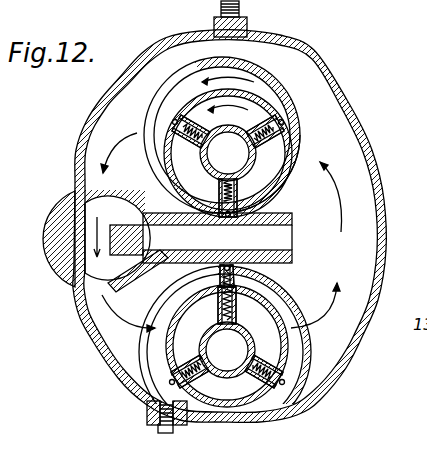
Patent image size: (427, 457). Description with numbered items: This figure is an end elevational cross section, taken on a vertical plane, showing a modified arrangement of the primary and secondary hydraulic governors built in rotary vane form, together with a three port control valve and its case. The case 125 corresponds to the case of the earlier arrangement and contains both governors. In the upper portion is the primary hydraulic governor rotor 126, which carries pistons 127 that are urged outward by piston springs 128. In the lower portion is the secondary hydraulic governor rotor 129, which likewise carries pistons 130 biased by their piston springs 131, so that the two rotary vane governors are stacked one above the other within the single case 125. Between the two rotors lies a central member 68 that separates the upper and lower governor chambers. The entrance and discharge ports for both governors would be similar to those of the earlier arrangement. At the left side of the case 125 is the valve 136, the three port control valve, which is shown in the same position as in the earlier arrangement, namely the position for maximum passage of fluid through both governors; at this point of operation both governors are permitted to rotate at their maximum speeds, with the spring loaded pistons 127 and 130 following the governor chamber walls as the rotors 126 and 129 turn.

The case 125 is at (296, 38).
The primary hydraulic governor rotor 126 is at (296, 145).
The pistons 127 is at (304, 126).
The piston springs 128 is at (275, 110).
The central partition bar 68 is at (254, 238).
The secondary hydraulic governor rotor 129 is at (292, 350).
The pistons 130 is at (237, 286).
The piston springs 131 is at (231, 271).
The valve 136 is at (57, 275).